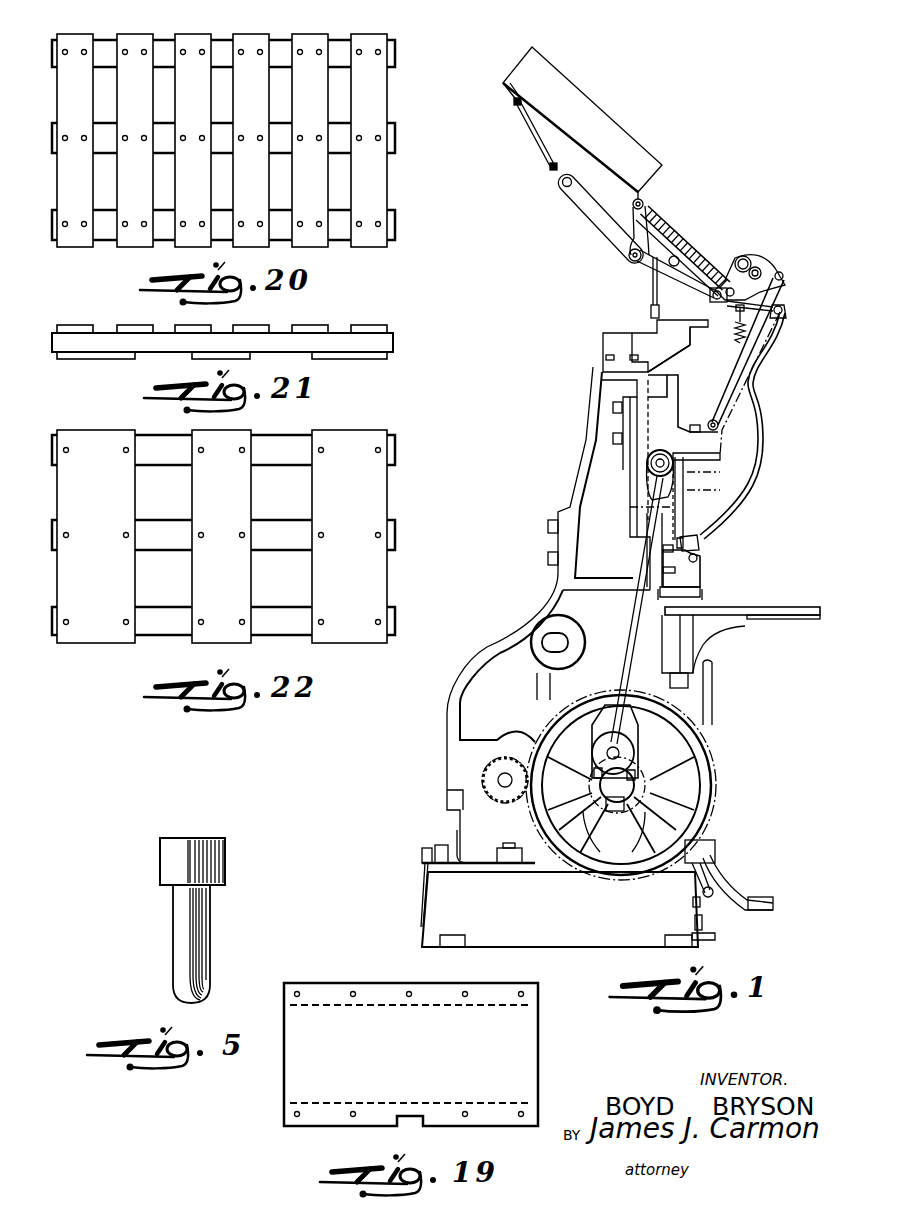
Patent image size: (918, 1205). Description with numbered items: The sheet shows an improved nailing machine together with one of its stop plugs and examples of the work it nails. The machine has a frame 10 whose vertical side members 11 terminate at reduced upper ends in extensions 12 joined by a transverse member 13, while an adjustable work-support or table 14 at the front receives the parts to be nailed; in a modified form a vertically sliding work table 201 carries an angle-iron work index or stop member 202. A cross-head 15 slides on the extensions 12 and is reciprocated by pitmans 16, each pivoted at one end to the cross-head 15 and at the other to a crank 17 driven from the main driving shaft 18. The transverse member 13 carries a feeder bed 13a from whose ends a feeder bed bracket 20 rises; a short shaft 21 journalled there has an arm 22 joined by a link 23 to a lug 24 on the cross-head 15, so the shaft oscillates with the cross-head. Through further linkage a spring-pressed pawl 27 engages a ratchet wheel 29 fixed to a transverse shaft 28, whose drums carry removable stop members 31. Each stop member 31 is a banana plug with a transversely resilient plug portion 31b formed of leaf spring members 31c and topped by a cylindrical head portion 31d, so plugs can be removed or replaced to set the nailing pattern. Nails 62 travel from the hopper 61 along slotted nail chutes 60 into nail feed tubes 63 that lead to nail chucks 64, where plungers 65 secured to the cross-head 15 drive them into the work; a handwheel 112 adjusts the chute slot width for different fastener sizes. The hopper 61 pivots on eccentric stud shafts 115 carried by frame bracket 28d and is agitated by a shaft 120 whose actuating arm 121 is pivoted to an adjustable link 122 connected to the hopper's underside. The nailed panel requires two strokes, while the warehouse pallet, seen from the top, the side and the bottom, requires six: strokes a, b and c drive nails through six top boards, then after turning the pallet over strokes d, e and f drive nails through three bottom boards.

In FIG. 20, the stroke a is at (230, 53).
In FIG. 20, the stroke b is at (231, 138).
In FIG. 20, the stroke c is at (230, 225).
In FIG. 22, the stroke d is at (231, 450).
In FIG. 22, the stroke e is at (230, 535).
In FIG. 22, the stroke f is at (230, 621).
In FIG. 5, the stop member 31 is at (201, 838).
In FIG. 5, the plug portion 31b is at (212, 946).
In FIG. 5, the leaf spring members 31c is at (212, 913).
In FIG. 5, the cylindrical head portion 31d is at (225, 870).
In FIG. 1, the frame 10 is at (549, 592).
In FIG. 1, the vertical side members 11 is at (520, 631).
In FIG. 1, the extensions 12 is at (590, 467).
In FIG. 1, the transverse member 13 is at (622, 333).
In FIG. 1, the feeder bed 13a is at (704, 344).
In FIG. 1, the work-support or table 14 is at (712, 640).
In FIG. 1, the cross-head 15 is at (670, 416).
In FIG. 1, the pitmans 16 is at (632, 628).
In FIG. 1, the crank 17 is at (597, 787).
In FIG. 1, the main driving shaft 18 is at (505, 788).
In FIG. 1, the feeder bed bracket 20 is at (672, 342).
In FIG. 1, the short shaft 21 is at (735, 315).
In FIG. 1, the arm 22 is at (771, 305).
In FIG. 1, the link 23 is at (752, 342).
In FIG. 1, the lug 24 is at (718, 428).
In FIG. 1, the spring-pressed pawl 27 is at (750, 266).
In FIG. 1, the shaft 28 is at (785, 276).
In FIG. 1, the frame bracket 28d is at (646, 275).
In FIG. 1, the ratchet wheel 29 is at (762, 272).
In FIG. 1, the nail chute 60 is at (687, 235).
In FIG. 1, the hopper 61 is at (616, 138).
In FIG. 1, the nails 62 is at (699, 258).
In FIG. 1, the nail feed tubes 63 is at (762, 452).
In FIG. 1, the nail chucks 64 is at (700, 578).
In FIG. 1, the plungers 65 is at (700, 537).
In FIG. 1, the handwheel 112 is at (674, 266).
In FIG. 1, the eccentric stud shafts 115 is at (644, 205).
In FIG. 1, the shaft 120 is at (628, 260).
In FIG. 1, the actuating arm 121 is at (592, 212).
In FIG. 1, the adjustable link 122 is at (535, 140).
In FIG. 1, the work table 201 is at (780, 620).
In FIG. 1, the work index or stop member 202 is at (797, 605).